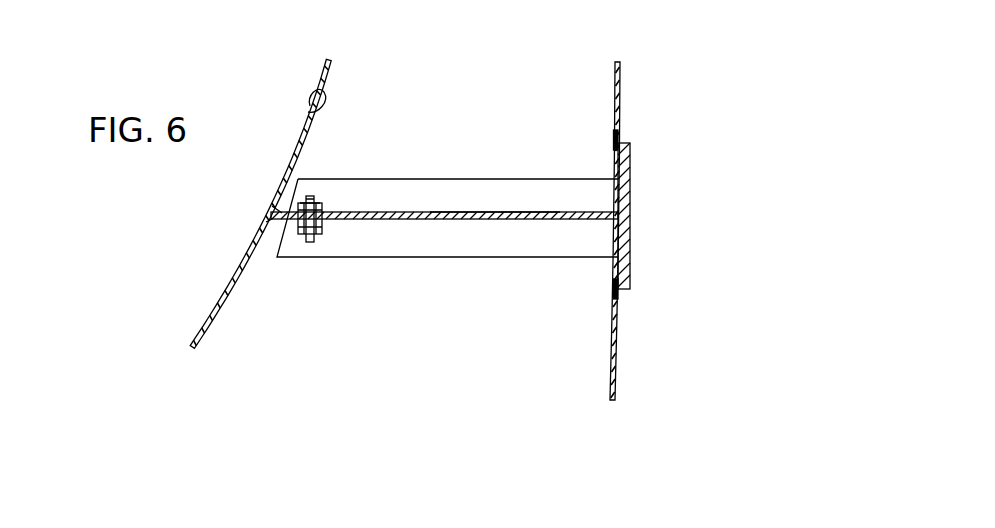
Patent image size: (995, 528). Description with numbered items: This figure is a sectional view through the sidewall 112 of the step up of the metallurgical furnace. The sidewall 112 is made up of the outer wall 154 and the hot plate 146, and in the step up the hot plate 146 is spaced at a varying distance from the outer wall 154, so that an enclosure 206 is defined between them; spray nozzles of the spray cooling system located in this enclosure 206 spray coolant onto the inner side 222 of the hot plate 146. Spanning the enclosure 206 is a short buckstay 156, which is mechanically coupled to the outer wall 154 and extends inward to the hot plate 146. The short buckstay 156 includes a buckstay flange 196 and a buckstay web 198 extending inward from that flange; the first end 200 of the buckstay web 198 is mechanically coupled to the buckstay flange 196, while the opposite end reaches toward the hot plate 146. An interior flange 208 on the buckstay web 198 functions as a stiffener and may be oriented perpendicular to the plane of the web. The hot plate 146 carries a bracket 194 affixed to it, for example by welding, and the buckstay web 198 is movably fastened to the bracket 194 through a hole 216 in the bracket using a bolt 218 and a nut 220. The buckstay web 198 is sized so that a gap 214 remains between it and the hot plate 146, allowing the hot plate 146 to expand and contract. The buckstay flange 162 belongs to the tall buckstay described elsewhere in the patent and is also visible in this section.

The sidewall 112 is at (588, 331).
The hot plate 146 is at (246, 266).
The outer wall 154 is at (624, 100).
The short buckstay 156 is at (634, 232).
The buckstay flange 162 is at (623, 300).
The bracket 194 is at (269, 225).
The buckstay flange 196 is at (632, 188).
The buckstay web 198 is at (528, 210).
The first end 200 is at (613, 222).
The enclosure 206 is at (500, 98).
The flange 208 is at (468, 181).
The gap 214 is at (284, 211).
The hole 216 is at (340, 212).
The bolt 218 is at (313, 203).
The nut 220 is at (322, 237).
The inner side 222 is at (312, 112).